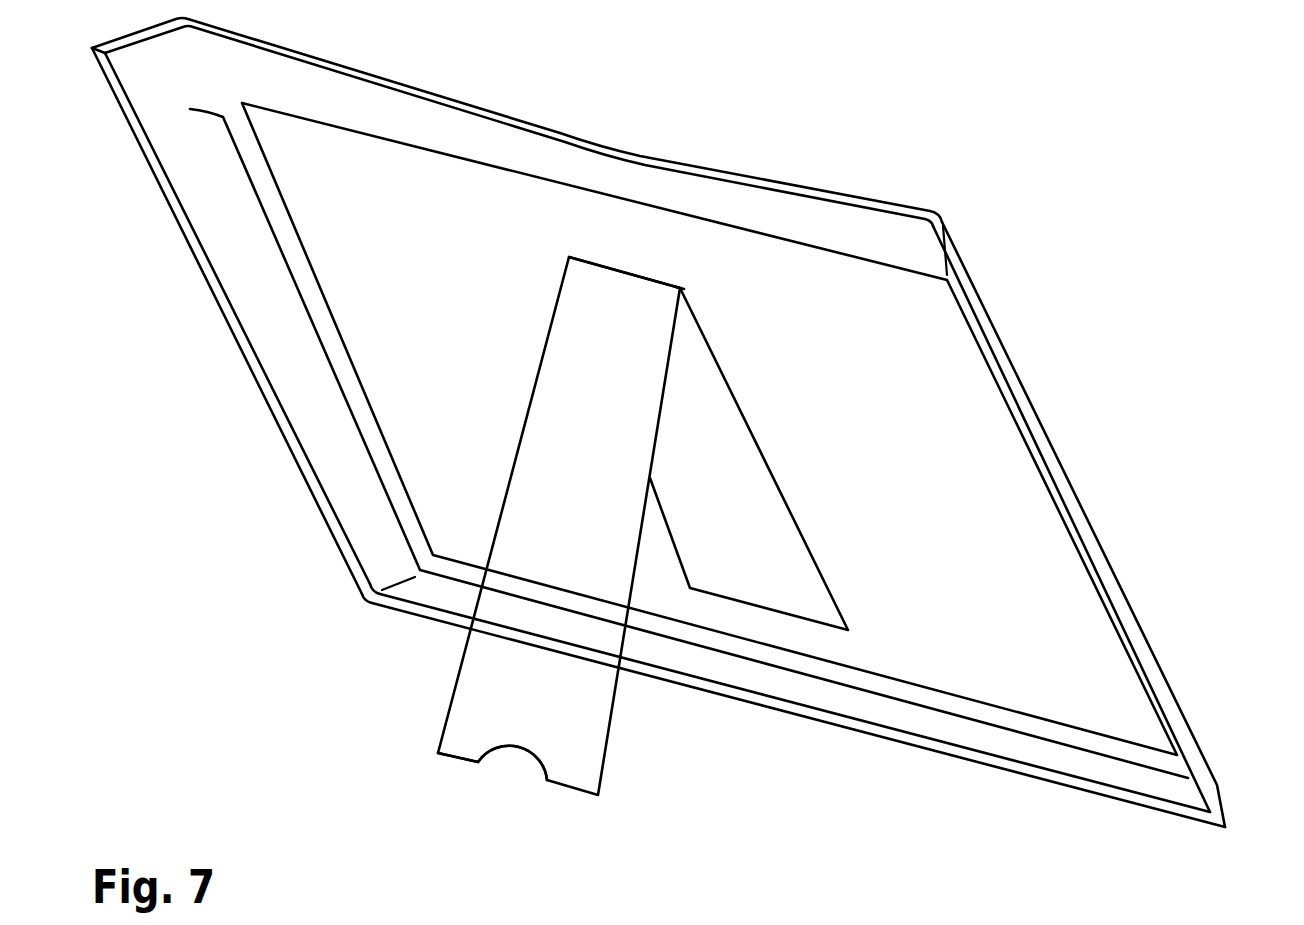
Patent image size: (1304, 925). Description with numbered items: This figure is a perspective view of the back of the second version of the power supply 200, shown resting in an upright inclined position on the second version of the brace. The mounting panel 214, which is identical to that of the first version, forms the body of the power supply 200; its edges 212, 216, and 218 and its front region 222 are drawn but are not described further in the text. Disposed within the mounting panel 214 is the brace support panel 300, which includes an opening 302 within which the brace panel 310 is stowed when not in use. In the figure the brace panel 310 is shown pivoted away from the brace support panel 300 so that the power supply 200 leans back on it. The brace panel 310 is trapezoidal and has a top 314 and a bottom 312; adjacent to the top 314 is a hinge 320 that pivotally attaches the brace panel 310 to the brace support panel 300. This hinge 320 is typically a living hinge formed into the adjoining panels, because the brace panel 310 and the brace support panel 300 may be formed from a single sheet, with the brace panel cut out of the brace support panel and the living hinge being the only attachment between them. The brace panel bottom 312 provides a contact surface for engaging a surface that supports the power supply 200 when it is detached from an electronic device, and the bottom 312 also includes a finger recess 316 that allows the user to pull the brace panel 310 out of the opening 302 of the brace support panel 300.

The power supply 200 is at (654, 450).
The bottom edge of frame 212 is at (1035, 780).
The mounting panel 214 is at (863, 198).
The right side edge of frame 216 is at (1080, 520).
The left side edge of frame 218 is at (167, 145).
The front face of frame 222 is at (475, 135).
The brace support panel 300 is at (438, 273).
The opening 302 is at (722, 372).
The brace panel 310 is at (554, 490).
The brace panel bottom 312 is at (460, 760).
The top of brace panel 314 is at (613, 265).
The finger recess 316 is at (530, 758).
The hinge 320 is at (680, 288).